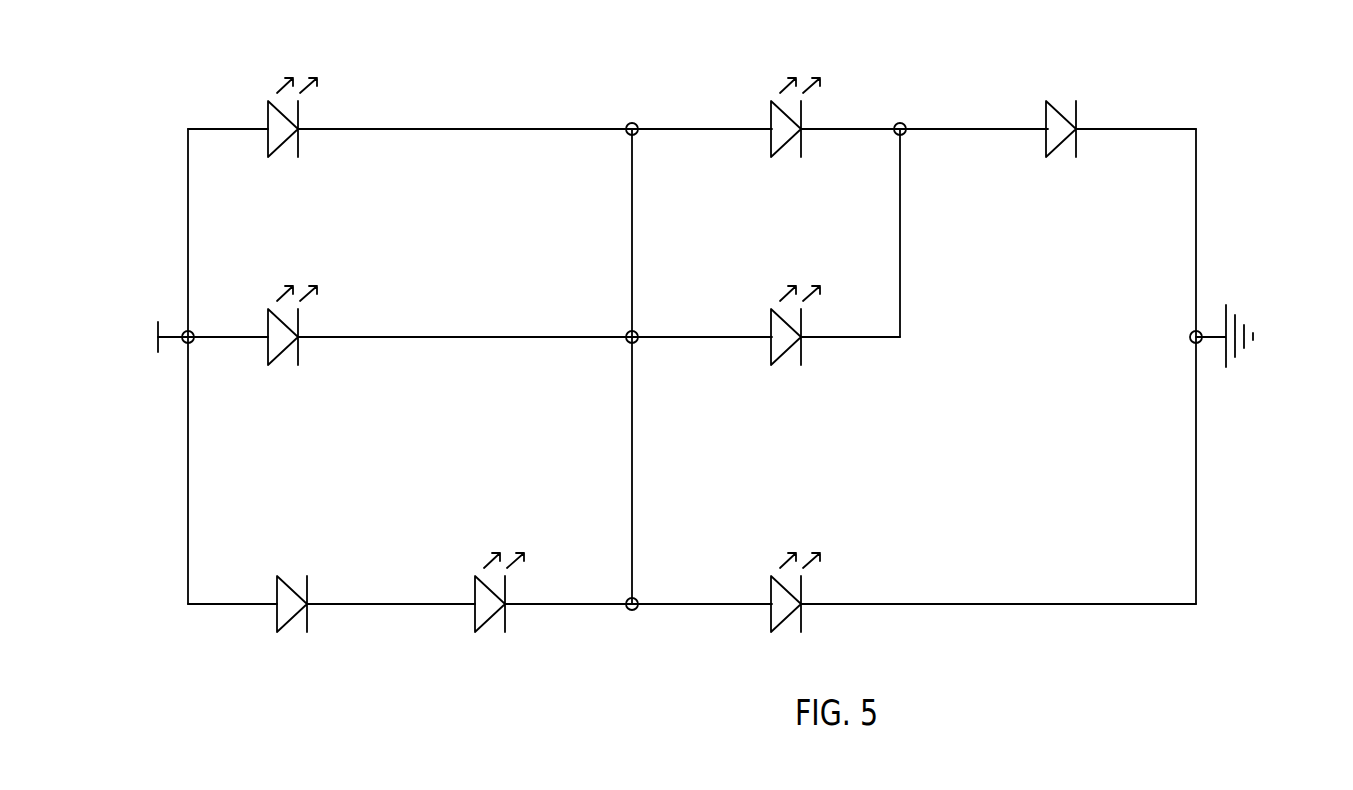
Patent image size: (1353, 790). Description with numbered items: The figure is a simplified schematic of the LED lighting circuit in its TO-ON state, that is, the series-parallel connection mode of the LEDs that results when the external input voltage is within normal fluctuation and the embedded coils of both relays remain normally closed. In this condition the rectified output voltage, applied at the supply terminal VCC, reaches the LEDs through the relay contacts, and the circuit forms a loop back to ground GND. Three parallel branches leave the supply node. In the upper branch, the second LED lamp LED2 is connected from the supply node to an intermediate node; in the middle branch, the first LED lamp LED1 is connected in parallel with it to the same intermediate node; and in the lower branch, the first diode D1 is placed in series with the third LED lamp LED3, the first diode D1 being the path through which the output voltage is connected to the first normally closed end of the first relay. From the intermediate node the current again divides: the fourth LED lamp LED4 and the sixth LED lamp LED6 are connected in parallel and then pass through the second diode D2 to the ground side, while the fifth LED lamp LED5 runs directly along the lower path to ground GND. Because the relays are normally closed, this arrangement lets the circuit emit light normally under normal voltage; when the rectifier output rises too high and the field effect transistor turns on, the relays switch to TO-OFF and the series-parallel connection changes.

The LED lamp LED1 is at (297, 302).
The LED lamp LED2 is at (297, 98).
The LED lamp LED3 is at (508, 565).
The LED lamp LED4 is at (808, 97).
The LED lamp LED5 is at (803, 560).
The LED lamp LED6 is at (809, 298).
The first diode D1 is at (298, 566).
The second diode D2 is at (1066, 97).
The supply voltage terminal VCC is at (125, 333).
The ground terminal GND is at (1263, 336).